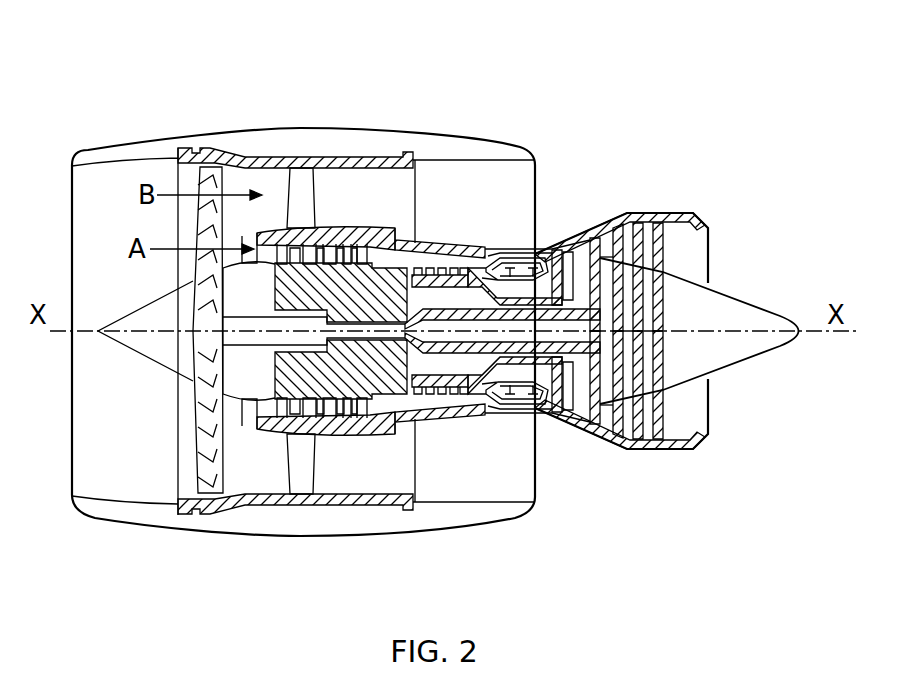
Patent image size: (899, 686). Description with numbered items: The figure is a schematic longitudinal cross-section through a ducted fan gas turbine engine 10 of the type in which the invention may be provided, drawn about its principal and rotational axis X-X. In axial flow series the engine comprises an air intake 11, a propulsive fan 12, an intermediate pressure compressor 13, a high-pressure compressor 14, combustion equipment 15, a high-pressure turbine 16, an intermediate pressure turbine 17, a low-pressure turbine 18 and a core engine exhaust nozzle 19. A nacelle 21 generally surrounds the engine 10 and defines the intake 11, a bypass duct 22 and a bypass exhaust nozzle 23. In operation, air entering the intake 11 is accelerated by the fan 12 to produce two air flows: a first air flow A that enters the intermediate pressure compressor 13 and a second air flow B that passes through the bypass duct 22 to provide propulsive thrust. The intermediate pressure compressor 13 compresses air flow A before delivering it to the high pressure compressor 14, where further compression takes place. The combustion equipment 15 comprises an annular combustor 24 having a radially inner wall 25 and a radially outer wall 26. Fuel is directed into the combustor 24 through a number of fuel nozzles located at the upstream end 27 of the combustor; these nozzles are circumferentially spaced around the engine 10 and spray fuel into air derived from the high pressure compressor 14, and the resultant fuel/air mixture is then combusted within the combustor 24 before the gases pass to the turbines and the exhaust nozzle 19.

The ducted fan gas turbine engine 10 is at (110, 92).
The air intake 11 is at (120, 162).
The propulsive fan 12 is at (207, 458).
The intermediate pressure compressor 13 is at (338, 413).
The high-pressure compressor 14 is at (447, 264).
The combustion equipment 15 is at (482, 447).
The high-pressure turbine 16 is at (547, 418).
The intermediate pressure turbine 17 is at (598, 247).
The low-pressure turbine 18 is at (607, 434).
The core engine exhaust nozzle 19 is at (698, 216).
The nacelle 21 is at (297, 141).
The bypass duct 22 is at (490, 191).
The bypass exhaust nozzle 23 is at (535, 158).
The annular combustor 24 is at (503, 398).
The radially inner wall 25 is at (522, 272).
The radially outer wall 26 is at (498, 253).
The upstream end of the combustor 27 is at (485, 252).